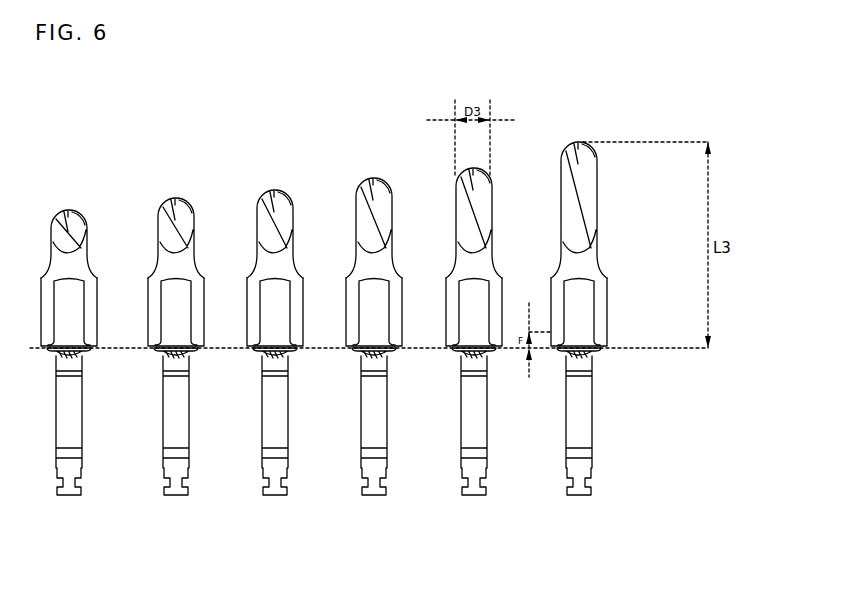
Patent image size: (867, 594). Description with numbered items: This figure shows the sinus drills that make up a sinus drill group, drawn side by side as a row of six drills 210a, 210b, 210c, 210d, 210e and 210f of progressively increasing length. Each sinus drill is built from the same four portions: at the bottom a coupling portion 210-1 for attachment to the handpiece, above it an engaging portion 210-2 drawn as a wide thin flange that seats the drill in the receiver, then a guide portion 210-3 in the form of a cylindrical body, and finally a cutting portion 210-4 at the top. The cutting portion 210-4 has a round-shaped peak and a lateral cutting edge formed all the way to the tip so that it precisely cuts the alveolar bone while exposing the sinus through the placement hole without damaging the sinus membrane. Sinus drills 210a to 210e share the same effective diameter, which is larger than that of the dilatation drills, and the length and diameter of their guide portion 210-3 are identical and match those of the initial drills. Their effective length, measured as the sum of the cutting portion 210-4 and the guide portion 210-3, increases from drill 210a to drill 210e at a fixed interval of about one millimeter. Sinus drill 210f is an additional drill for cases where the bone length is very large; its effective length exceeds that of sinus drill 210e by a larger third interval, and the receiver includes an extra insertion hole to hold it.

The sinus drill 210a is at (67, 497).
The sinus drill 210b is at (174, 497).
The sinus drill 210c is at (273, 497).
The sinus drill 210d is at (372, 497).
The sinus drill 210e is at (472, 497).
The sinus drill 210f is at (626, 349).
The coupling portion 210-1 is at (631, 425).
The engaging portion 210-2 is at (629, 378).
The guide portion 210-3 is at (613, 312).
The cutting portion 210-4 is at (613, 210).